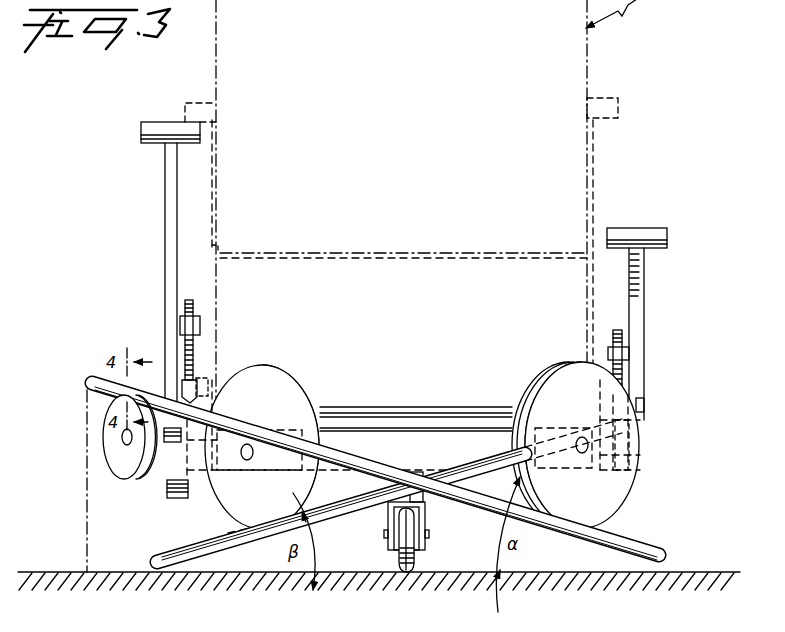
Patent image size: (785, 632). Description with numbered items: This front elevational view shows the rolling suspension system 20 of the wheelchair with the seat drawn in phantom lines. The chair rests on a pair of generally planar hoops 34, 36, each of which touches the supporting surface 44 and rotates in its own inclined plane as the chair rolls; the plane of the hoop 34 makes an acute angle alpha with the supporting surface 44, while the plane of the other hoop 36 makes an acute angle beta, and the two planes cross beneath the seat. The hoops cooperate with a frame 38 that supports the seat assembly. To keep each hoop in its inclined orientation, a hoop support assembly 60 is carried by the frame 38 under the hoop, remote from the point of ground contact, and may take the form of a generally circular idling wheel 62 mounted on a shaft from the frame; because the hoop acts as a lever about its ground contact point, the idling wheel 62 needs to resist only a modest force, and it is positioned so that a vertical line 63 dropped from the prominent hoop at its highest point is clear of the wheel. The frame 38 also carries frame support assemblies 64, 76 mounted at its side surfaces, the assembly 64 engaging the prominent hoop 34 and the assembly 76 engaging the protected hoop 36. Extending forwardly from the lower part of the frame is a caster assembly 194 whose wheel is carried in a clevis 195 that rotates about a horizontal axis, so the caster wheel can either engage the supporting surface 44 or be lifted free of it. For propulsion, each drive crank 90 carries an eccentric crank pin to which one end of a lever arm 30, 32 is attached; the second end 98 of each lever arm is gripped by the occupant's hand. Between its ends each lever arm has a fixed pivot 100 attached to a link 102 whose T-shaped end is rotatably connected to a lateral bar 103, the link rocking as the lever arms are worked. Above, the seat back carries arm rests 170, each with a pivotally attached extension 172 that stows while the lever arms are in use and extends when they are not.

The rolling suspension system 20 is at (130, 488).
The lever arm 30 is at (640, 298).
The lever arm 32 is at (168, 258).
The hoop 34 is at (645, 545).
The hoop 36 is at (190, 552).
The frame 38 is at (452, 432).
The supporting surface 44 is at (697, 572).
The hoop support assembly 60 is at (106, 460).
The idling wheel 62 is at (110, 427).
The vertical line 63 is at (88, 538).
The frame support assembly 64 is at (633, 432).
The frame support assembly 76 is at (213, 500).
The drive crank 90 is at (168, 490).
The second end of lever arm 98 is at (141, 135).
The fixed pivot 100 is at (188, 362).
The link 102 is at (205, 373).
The lateral bar 103 is at (384, 408).
The arm rest 170 is at (594, 183).
The extension 172 is at (178, 106).
The caster assembly 194 is at (405, 566).
The clevis 195 is at (425, 523).